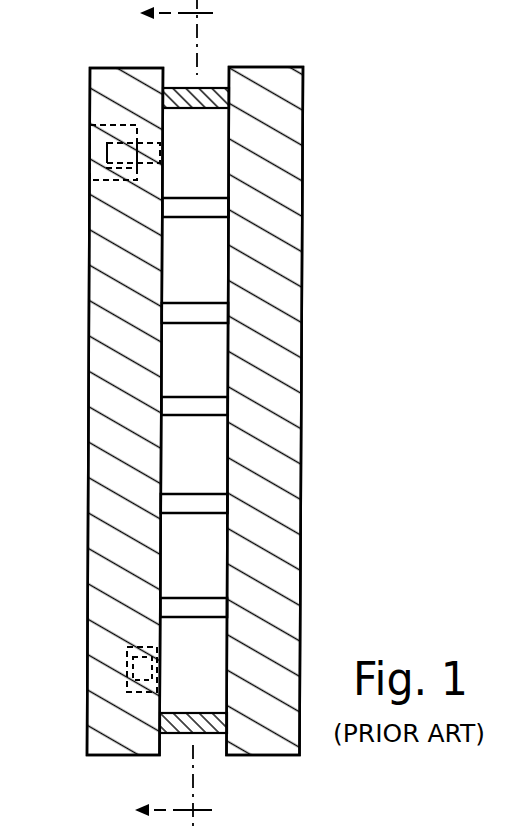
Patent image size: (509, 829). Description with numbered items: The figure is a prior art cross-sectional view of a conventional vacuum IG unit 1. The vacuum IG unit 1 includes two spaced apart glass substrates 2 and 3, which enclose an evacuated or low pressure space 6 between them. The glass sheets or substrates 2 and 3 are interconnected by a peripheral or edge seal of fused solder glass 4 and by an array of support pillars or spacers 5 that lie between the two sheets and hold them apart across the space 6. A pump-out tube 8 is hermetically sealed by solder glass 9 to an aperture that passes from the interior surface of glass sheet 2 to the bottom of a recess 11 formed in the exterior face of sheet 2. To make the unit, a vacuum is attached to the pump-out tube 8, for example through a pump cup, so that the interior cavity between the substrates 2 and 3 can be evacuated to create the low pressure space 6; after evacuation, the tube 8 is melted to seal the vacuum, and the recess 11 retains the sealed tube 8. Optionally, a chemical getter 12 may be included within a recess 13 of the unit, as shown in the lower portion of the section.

The vacuum IG unit 1 is at (313, 160).
The glass substrate 2 is at (88, 460).
The glass substrate 3 is at (270, 335).
The peripheral or edge seal of fused solder glass 4 is at (212, 97).
The support pillars or spacers 5 is at (202, 613).
The evacuated or low pressure space 6 is at (177, 540).
The pump-out tube 8 is at (104, 157).
The solder glass 9 is at (123, 140).
The recess 11 is at (105, 178).
The chemical getter 12 is at (135, 672).
The recess 13 is at (135, 695).